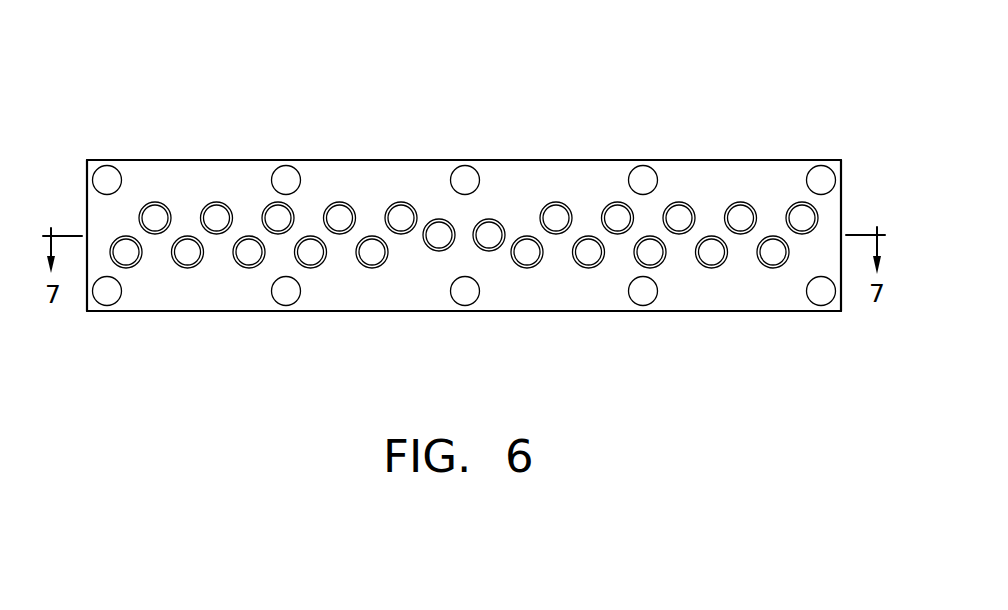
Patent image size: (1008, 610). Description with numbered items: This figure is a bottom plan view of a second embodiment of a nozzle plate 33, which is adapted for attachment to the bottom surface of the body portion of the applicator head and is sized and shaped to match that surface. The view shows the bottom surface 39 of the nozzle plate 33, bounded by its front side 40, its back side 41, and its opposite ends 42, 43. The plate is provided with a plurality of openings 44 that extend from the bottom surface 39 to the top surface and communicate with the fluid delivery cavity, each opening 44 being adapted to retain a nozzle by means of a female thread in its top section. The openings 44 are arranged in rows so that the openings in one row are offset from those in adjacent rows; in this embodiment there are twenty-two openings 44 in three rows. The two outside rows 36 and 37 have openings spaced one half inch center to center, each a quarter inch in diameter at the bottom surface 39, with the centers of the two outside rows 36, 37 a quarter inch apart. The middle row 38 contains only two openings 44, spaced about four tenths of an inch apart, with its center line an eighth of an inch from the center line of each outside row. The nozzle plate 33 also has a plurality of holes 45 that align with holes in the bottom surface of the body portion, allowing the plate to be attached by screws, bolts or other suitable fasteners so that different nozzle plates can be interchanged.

The nozzle plate 33 is at (240, 80).
The outside row 36 is at (702, 202).
The outside row 37 is at (792, 252).
The middle row 38 is at (458, 246).
The bottom surface 39 is at (537, 175).
The front side 40 is at (430, 160).
The back side 41 is at (388, 312).
The end 42 is at (87, 227).
The end 43 is at (842, 303).
The openings 44 is at (155, 228).
The holes 45 is at (102, 193).